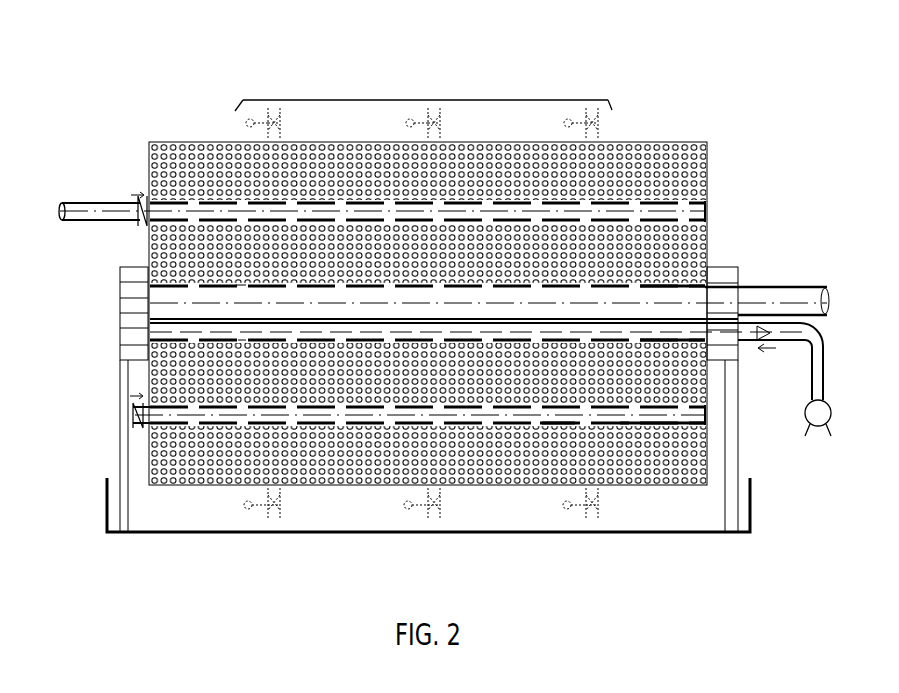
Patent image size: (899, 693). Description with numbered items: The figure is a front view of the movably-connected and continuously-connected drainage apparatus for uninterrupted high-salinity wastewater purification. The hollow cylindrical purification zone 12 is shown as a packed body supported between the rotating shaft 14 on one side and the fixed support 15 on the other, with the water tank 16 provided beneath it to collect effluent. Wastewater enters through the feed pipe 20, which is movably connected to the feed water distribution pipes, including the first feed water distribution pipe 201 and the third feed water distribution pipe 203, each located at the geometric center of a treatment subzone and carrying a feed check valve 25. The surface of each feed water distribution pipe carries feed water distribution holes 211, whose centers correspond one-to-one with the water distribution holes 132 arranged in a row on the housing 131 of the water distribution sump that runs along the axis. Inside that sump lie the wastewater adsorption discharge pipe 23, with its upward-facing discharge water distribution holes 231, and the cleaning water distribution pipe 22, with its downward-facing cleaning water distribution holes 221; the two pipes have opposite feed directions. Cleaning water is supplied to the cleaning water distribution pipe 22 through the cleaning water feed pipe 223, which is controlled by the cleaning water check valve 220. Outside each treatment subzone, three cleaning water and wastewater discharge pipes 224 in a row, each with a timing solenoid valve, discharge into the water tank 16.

The purification zone 12 is at (660, 180).
The rotating shaft 14 is at (120, 272).
The fixed support 15 is at (726, 500).
The water tank 16 is at (105, 478).
The feed pipe 20 is at (117, 202).
The cleaning water distribution pipe 22 is at (655, 395).
The wastewater adsorption discharge pipe 23 is at (758, 288).
The feed check valve 25 is at (143, 223).
The housing 131 is at (150, 200).
The water distribution holes 132 is at (240, 284).
The first feed water distribution pipe 201 is at (402, 200).
The third feed water distribution pipe 203 is at (657, 427).
The feed water distribution holes 211 is at (570, 427).
The cleaning water check valve 220 is at (762, 328).
The cleaning water distribution holes 221 is at (663, 338).
The cleaning water feed pipe 223 is at (810, 373).
The cleaning water and wastewater discharge pipes 224 is at (455, 100).
The discharge water distribution holes 231 is at (660, 287).